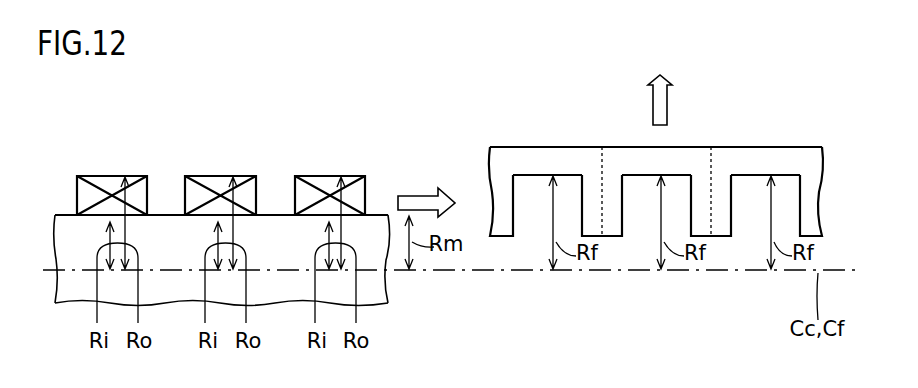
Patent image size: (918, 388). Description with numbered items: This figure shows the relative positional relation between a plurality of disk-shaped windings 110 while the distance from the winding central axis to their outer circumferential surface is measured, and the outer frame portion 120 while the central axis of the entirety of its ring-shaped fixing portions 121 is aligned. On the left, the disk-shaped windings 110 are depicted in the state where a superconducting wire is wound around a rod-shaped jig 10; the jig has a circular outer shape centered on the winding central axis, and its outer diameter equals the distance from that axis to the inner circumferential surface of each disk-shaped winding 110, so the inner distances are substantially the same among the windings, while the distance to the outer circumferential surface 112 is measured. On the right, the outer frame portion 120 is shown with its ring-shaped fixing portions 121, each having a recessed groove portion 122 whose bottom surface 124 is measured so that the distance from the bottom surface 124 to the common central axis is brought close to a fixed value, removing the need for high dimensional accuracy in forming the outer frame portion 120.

The rod-shaped jig 10 is at (375, 283).
The disk-shaped winding 110 is at (104, 185).
The outer circumferential surface 112 is at (140, 167).
The outer frame portion 120 is at (817, 147).
The ring-shaped fixing portion 121 is at (557, 163).
The recessed groove portion 122 is at (546, 212).
The bottom surface 124 is at (532, 188).